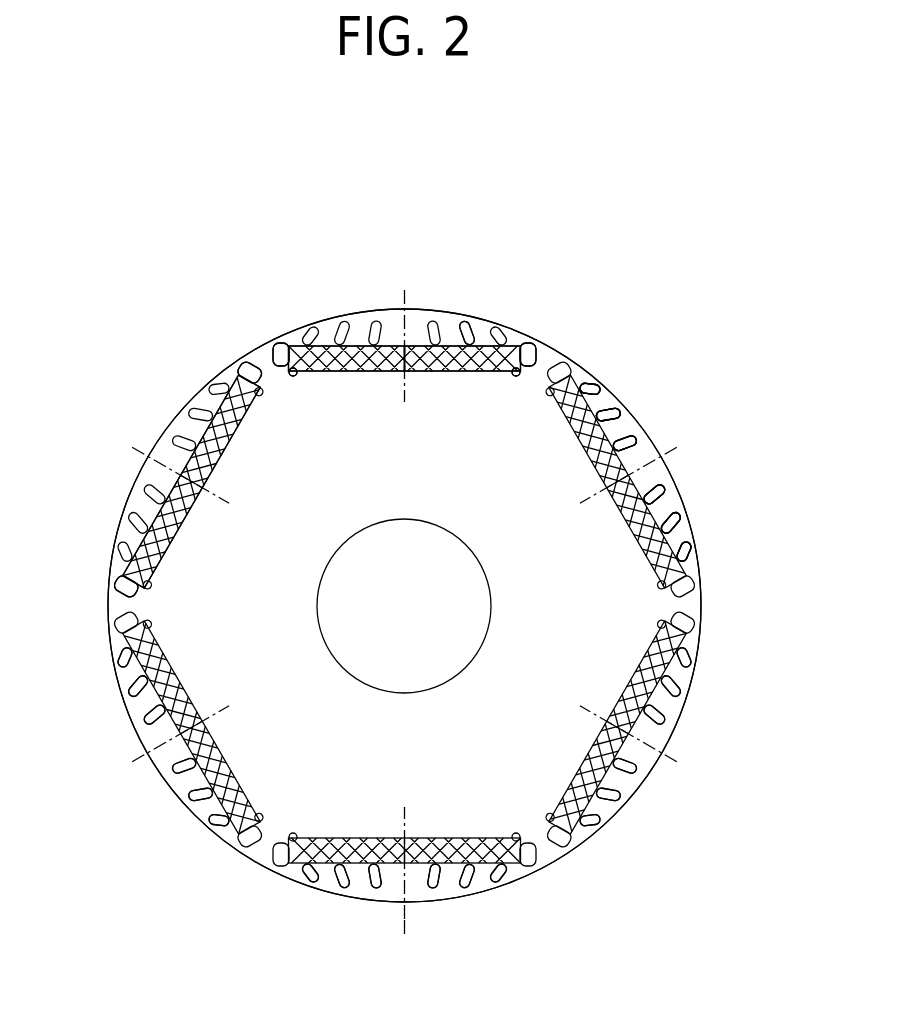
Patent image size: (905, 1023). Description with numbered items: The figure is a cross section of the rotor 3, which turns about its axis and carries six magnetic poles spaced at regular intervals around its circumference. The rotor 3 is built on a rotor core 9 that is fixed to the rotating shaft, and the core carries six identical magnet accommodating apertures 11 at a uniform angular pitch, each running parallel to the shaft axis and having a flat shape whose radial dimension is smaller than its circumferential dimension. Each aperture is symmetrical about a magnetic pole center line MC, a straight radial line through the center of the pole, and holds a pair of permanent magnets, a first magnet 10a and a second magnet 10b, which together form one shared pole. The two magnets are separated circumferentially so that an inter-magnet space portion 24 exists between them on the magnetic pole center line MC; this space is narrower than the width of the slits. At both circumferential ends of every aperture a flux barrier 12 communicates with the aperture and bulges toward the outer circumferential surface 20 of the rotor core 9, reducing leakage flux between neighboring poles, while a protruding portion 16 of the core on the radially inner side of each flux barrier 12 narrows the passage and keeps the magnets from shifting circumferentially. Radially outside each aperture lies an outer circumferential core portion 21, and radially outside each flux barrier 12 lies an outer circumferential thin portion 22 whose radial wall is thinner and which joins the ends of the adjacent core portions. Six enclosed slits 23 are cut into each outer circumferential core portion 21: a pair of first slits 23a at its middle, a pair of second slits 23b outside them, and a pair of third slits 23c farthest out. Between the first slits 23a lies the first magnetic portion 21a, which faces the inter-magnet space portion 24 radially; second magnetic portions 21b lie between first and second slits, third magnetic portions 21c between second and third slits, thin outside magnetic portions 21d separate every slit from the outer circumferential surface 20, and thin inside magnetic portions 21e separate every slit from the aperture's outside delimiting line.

The rotor 3 is at (186, 383).
The rotor core 9 is at (118, 628).
The first magnet 10a is at (300, 345).
The second magnet 10b is at (512, 345).
The magnet accommodating aperture 11 is at (190, 440).
The flux barrier 12 is at (243, 372).
The protruding portion 16 is at (275, 352).
The outer circumferential surface 20 is at (598, 366).
The outer circumferential core portion 21 is at (464, 322).
The first magnetic portion 21a is at (660, 718).
The second magnetic portion 21b is at (677, 690).
The third magnetic portion 21c is at (690, 660).
The thin outside magnetic portion 21d is at (500, 880).
The thin inside magnetic portion 21e is at (213, 824).
The outer circumferential thin portion 22 is at (288, 346).
The slit 23 is at (690, 338).
The first slit 23a is at (631, 440).
The second slit 23b is at (614, 410).
The third slit 23c is at (596, 384).
The inter-magnet space portion 24 is at (400, 352).
The magnetic pole center line MC is at (405, 290).